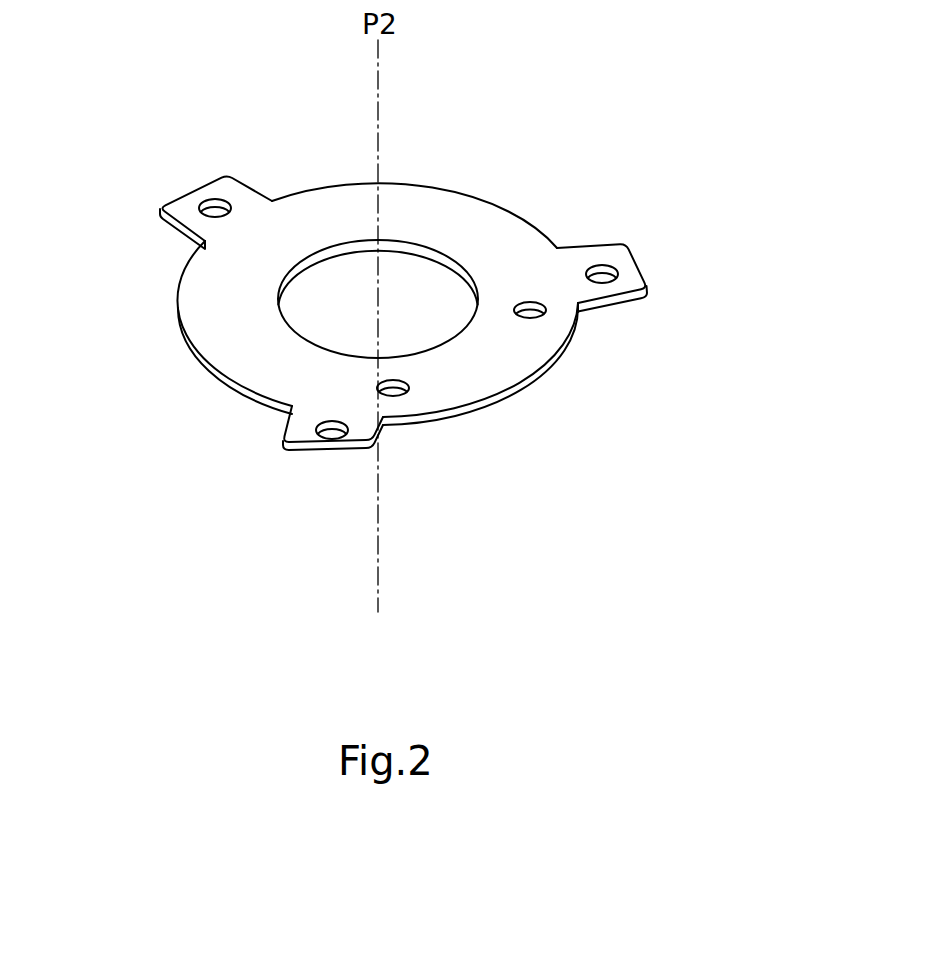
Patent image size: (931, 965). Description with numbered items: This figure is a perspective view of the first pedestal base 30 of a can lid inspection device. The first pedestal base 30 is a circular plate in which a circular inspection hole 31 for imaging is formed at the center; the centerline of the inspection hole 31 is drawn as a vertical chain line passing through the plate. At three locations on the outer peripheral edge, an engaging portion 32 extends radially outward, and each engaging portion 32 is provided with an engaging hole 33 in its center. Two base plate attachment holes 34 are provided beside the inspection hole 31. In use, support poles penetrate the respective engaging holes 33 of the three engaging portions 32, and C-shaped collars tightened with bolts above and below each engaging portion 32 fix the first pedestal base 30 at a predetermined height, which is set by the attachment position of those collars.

The first pedestal base 30 is at (436, 303).
The inspection hole 31 is at (413, 292).
The engaging portion 32 is at (218, 183).
The engaging hole 33 is at (212, 203).
The base plate attachment hole 34 is at (540, 305).